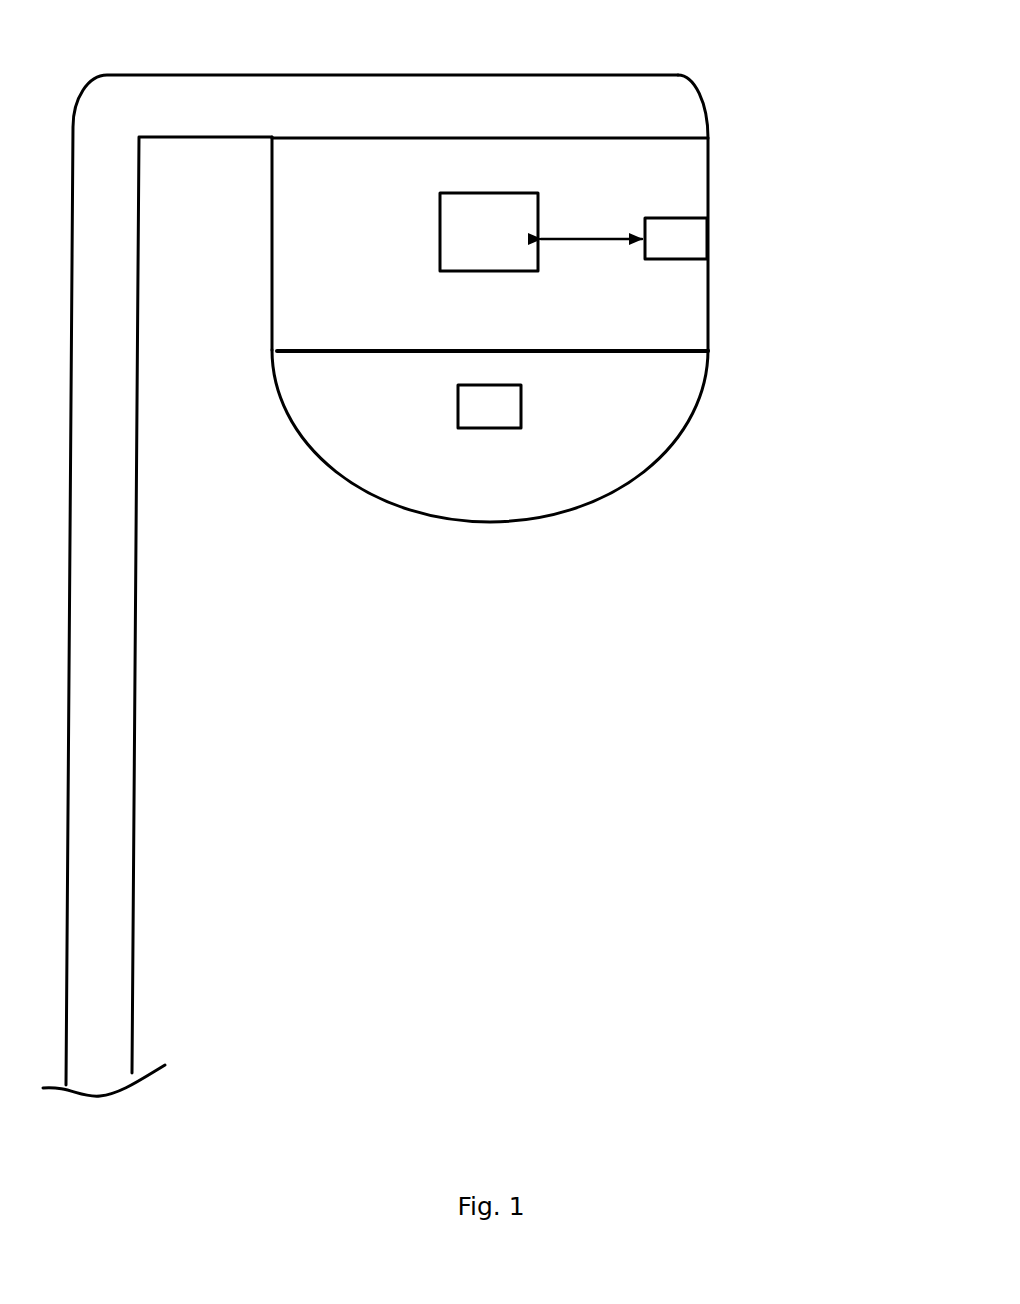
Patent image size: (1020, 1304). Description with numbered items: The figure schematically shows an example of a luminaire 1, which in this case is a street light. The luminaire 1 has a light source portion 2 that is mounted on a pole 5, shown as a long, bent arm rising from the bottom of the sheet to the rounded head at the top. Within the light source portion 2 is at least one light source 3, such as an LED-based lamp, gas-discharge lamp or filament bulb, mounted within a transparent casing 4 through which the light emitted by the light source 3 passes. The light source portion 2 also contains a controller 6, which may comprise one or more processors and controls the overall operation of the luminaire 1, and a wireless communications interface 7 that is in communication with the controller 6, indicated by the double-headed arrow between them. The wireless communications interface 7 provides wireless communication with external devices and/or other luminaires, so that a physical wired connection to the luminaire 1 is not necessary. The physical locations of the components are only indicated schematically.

The luminaire 1 is at (692, 660).
The light source portion 2 is at (797, 364).
The light source 3 is at (458, 403).
The transparent casing 4 is at (687, 418).
The pole 5 is at (137, 687).
The controller 6 is at (487, 193).
The wireless communications interface 7 is at (678, 218).